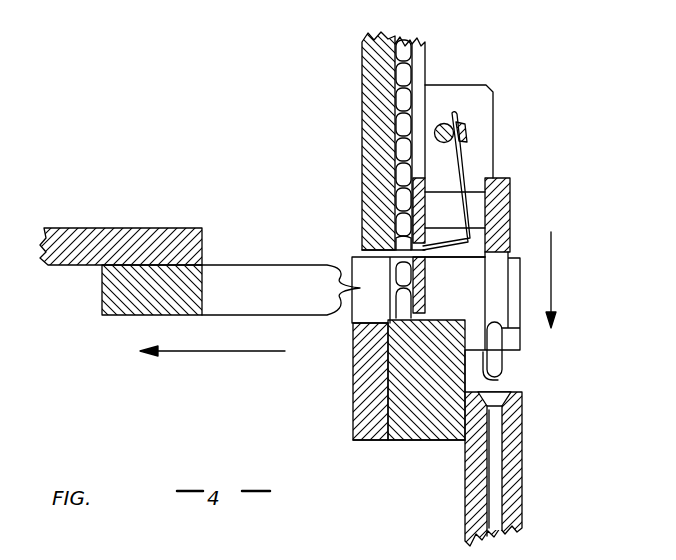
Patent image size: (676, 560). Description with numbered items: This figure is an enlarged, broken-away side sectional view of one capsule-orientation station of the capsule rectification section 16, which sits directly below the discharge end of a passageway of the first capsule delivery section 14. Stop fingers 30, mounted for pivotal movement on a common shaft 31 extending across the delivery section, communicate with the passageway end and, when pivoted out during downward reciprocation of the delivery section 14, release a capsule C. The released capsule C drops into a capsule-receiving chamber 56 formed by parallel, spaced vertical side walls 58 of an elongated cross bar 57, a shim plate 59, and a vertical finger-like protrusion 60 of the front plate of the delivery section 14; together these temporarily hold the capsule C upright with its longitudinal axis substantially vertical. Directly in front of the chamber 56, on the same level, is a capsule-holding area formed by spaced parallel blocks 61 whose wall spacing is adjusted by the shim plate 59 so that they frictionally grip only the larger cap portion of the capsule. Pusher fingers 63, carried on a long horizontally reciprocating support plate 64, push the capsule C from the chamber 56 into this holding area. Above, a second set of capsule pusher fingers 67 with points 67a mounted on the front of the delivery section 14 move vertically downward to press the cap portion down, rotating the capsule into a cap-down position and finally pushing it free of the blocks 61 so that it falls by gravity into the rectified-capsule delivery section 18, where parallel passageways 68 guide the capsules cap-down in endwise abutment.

The first capsule delivery section 14 is at (362, 111).
The capsule C is at (403, 48).
The capsule rectification section 16 is at (539, 215).
The rectified-capsule delivery section 18 is at (524, 510).
The stop fingers 30 is at (462, 168).
The common shaft 31 is at (440, 122).
The capsule-receiving chamber 56 is at (346, 321).
The elongated cross bar 57 is at (353, 399).
The vertical side walls 58 is at (363, 267).
The shim plate 59 is at (437, 441).
The vertical finger-like protrusion 60 is at (426, 284).
The spaced parallel blocks 61 is at (521, 292).
The pusher fingers 63 is at (283, 264).
The support plate 64 is at (167, 228).
The capsule pusher fingers 67 is at (493, 288).
The points 67a is at (498, 376).
The parallel passageways 68 is at (492, 465).